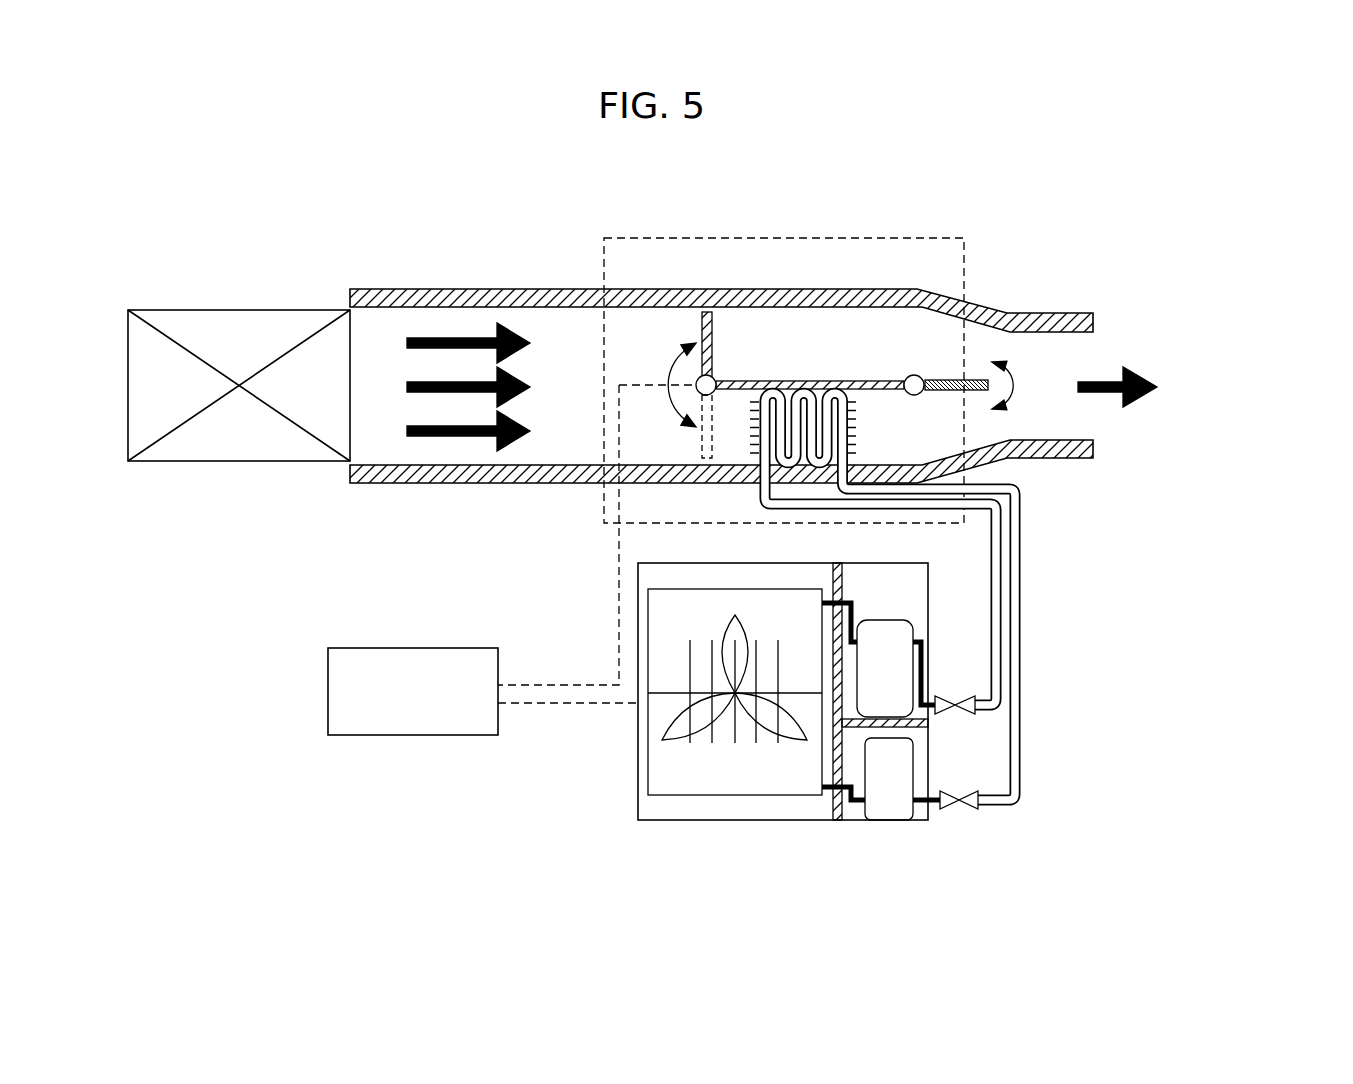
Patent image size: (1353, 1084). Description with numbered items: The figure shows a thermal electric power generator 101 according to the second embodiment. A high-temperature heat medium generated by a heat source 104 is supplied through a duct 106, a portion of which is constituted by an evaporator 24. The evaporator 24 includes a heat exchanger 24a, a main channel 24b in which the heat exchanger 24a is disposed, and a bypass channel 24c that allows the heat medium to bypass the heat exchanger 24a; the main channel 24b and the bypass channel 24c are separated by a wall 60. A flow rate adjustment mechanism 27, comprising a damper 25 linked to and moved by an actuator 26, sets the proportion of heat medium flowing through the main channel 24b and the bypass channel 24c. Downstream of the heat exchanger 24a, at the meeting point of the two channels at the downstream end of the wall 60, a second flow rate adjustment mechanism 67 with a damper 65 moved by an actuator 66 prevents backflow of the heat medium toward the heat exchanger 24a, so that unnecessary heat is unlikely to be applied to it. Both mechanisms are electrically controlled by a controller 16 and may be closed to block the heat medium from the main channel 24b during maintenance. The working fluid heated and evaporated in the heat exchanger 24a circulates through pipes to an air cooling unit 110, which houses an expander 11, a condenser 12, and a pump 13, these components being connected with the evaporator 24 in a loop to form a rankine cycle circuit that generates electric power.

The thermal electric power generator 101 is at (928, 174).
The heat source 104 is at (237, 310).
The duct 106 is at (418, 289).
The evaporator 24 is at (948, 238).
The heat exchanger 24a is at (755, 445).
The main channel 24b is at (890, 422).
The bypass channel 24c is at (810, 335).
The damper 25 is at (703, 335).
The actuator 26 is at (712, 377).
The flow rate adjustment mechanism 27 is at (709, 308).
The wall 60 is at (863, 380).
The damper 65 is at (973, 378).
The actuator 66 is at (915, 377).
The second flow rate adjustment mechanism 67 is at (980, 314).
The air cooling unit 110 is at (808, 737).
The expander 11 is at (885, 620).
The condenser 12 is at (735, 770).
The pump 13 is at (888, 792).
The controller 16 is at (418, 735).